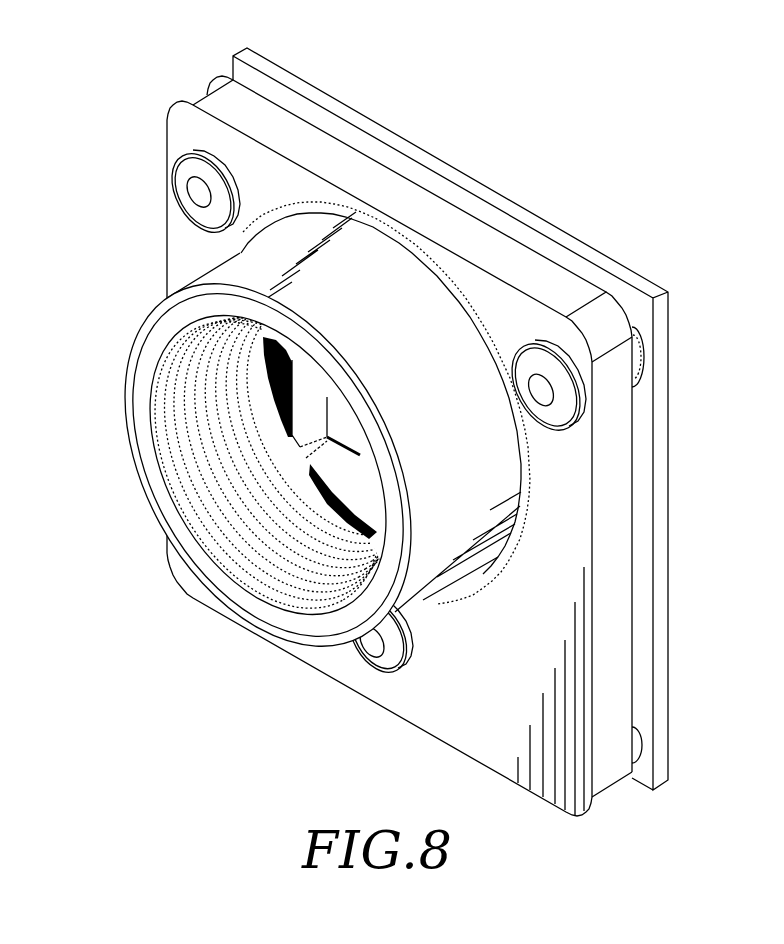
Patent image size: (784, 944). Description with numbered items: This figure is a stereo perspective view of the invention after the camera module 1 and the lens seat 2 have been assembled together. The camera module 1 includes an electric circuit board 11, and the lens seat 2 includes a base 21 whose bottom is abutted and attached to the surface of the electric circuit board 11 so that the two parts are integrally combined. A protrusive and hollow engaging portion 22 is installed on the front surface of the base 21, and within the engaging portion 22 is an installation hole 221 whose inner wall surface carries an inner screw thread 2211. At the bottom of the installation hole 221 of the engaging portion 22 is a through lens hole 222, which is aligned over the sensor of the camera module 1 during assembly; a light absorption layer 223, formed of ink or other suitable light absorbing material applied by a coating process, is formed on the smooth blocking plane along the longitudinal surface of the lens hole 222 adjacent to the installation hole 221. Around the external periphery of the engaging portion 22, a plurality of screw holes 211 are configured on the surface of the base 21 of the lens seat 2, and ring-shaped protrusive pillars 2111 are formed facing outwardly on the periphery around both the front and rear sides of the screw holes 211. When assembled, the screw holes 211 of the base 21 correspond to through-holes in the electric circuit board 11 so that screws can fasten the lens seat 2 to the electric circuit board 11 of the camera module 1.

The camera module 1 is at (622, 243).
The electric circuit board 11 is at (620, 295).
The lens seat 2 is at (124, 282).
The base 21 is at (185, 248).
The screw holes 211 is at (337, 405).
The ring-shaped protrusive pillars 2111 is at (200, 153).
The engaging portion 22 is at (487, 508).
The installation hole 221 is at (269, 460).
The inner screw thread 2211 is at (232, 483).
The lens hole 222 is at (308, 397).
The light absorption layer 223 is at (265, 356).